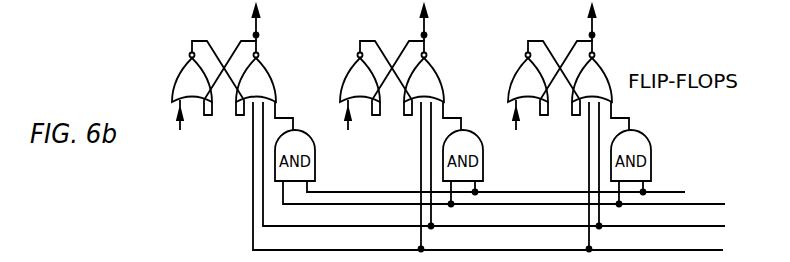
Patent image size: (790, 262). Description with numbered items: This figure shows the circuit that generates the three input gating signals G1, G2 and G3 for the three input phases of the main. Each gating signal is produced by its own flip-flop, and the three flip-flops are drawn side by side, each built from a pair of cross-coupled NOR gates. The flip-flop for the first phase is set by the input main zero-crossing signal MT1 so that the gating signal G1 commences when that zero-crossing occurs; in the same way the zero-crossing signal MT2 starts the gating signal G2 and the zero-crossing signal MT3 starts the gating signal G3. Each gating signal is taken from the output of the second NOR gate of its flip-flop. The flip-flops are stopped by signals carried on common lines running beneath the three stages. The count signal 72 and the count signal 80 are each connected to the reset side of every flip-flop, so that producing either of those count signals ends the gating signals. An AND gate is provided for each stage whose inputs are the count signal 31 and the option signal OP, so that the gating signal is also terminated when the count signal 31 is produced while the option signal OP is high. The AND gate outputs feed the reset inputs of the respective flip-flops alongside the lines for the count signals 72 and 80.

The input gating signal G1 is at (274, 23).
The input gating signal G2 is at (442, 23).
The input gating signal G3 is at (610, 23).
The input main zero-crossing signal MT1 is at (174, 129).
The input main zero-crossing signal MT2 is at (346, 129).
The input main zero-crossing signal MT3 is at (516, 128).
The option signal OP is at (496, 182).
The count signal 31 is at (511, 190).
The count signal 72 is at (511, 168).
The count signal 80 is at (508, 182).